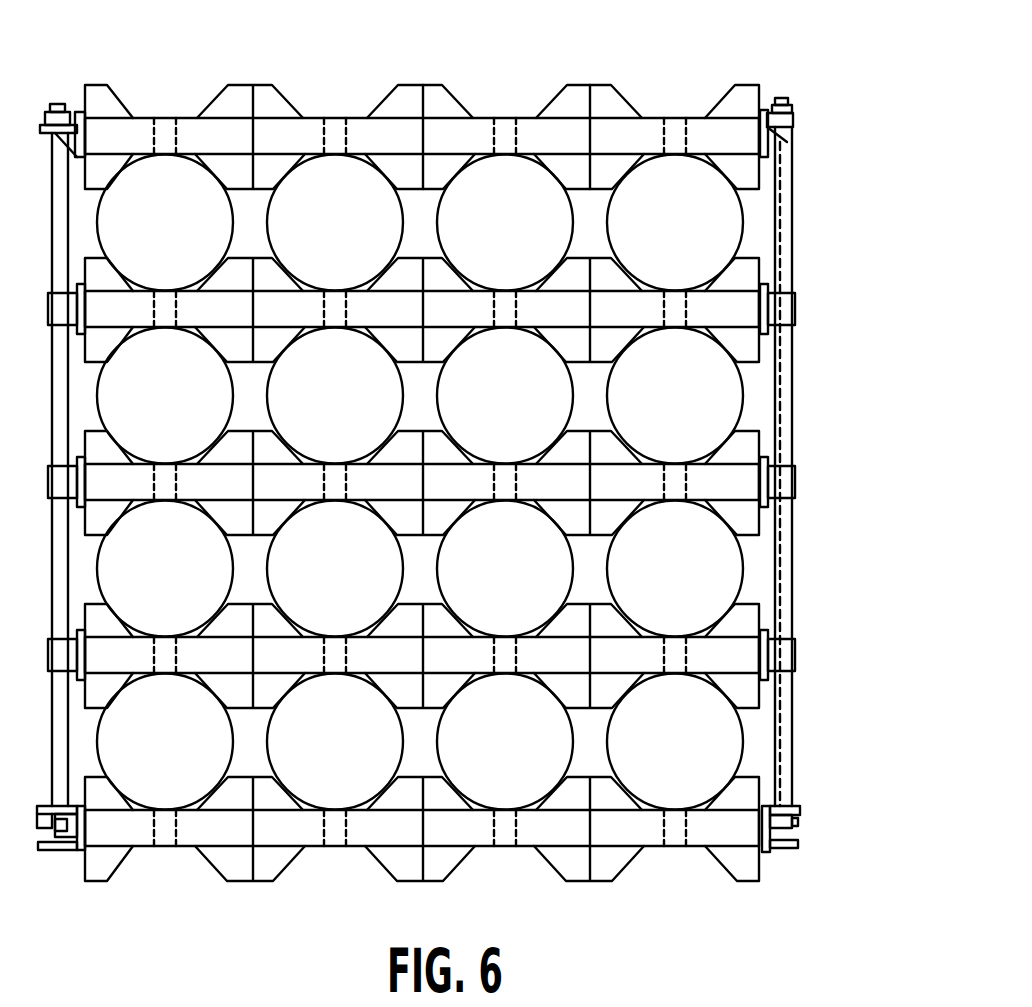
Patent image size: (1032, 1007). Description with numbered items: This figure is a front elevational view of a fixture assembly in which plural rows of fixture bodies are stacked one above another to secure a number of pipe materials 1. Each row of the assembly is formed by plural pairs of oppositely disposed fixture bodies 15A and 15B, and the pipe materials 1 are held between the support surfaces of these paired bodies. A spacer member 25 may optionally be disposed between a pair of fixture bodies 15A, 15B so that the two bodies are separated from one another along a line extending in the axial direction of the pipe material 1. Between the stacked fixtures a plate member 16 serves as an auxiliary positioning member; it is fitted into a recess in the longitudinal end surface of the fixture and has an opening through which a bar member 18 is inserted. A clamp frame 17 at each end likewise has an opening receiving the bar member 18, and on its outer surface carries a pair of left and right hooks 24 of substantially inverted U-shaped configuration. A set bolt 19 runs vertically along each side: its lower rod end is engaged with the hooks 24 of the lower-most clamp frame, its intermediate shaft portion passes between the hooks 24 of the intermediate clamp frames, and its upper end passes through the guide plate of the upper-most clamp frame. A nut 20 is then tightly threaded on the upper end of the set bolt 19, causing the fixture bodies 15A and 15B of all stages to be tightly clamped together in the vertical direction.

The pipe material 1 is at (745, 390).
The fixture body 15A is at (107, 103).
The fixture body 15B is at (243, 93).
The plate member 16 is at (423, 135).
The clamp frame 17 is at (760, 90).
The bar member 18 is at (638, 118).
The set bolt 19 is at (790, 233).
The nut 20 is at (793, 111).
The hook 24 is at (800, 812).
The spacer member 25 is at (340, 122).